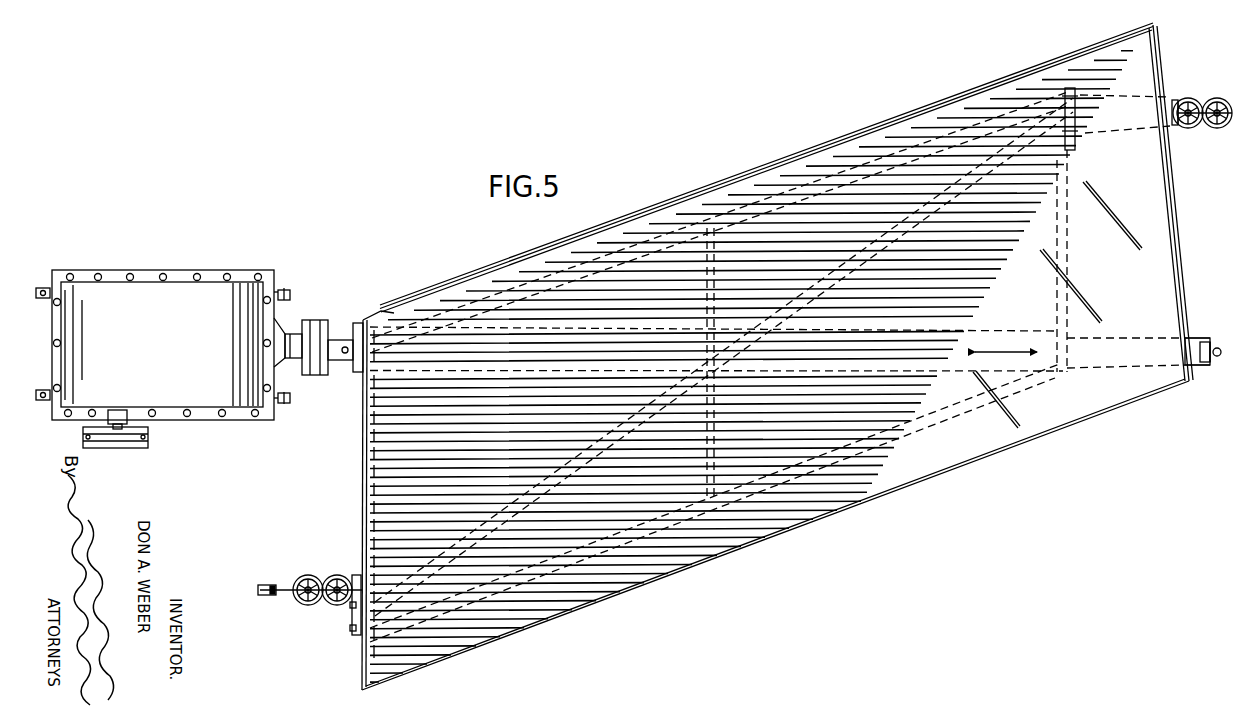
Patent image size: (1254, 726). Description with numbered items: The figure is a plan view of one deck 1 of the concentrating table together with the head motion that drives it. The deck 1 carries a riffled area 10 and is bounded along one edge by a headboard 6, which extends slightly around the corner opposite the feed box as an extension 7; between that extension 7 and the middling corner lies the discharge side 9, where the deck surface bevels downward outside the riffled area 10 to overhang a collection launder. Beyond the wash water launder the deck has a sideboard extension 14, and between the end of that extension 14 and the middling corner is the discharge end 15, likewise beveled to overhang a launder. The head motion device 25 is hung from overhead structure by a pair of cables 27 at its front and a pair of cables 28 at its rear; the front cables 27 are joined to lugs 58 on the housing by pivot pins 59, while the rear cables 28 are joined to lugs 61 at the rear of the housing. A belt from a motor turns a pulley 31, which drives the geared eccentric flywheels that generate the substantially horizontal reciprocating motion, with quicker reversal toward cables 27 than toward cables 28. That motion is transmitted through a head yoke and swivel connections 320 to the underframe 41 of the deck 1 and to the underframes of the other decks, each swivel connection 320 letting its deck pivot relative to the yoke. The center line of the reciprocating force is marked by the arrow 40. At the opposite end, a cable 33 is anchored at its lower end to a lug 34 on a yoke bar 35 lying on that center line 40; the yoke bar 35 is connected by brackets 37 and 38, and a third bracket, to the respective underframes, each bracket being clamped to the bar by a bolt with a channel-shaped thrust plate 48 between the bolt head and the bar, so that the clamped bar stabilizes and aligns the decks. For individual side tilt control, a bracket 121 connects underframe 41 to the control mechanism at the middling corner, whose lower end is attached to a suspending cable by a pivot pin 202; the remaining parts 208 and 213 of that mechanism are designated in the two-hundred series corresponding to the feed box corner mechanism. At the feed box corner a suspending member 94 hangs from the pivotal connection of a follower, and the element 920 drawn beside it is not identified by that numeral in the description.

The deck 1 is at (771, 356).
The headboard 6 is at (362, 512).
The headboard extension 7 is at (372, 317).
The discharge side 9 is at (640, 216).
The riffled area 10 is at (848, 166).
The sideboard extension 14 is at (1185, 351).
The discharge end 15 is at (1172, 240).
The head motion device 25 is at (190, 355).
The cables 27 is at (290, 296).
The cables 28 is at (60, 317).
The pulley 31 is at (118, 449).
The cable 33 is at (1222, 365).
The lug 34 is at (1220, 350).
The yoke bar 35 is at (1202, 366).
The bracket 37 is at (1198, 340).
The bracket 38 is at (148, 432).
The arrow 40 is at (1005, 356).
The underframe 41 is at (947, 417).
The thrust plate 48 is at (1215, 366).
The lugs 58 is at (283, 290).
The pivot pins 59 is at (290, 293).
The lugs 61 is at (45, 292).
The suspending member 94 is at (268, 597).
The bracket 121 is at (1167, 98).
The pivot pin 202 is at (1203, 99).
The axle 208 is at (1230, 128).
The wheel shaft 213 is at (1188, 130).
The swivel connections 320 is at (345, 336).
The lower wheels 920 is at (310, 577).